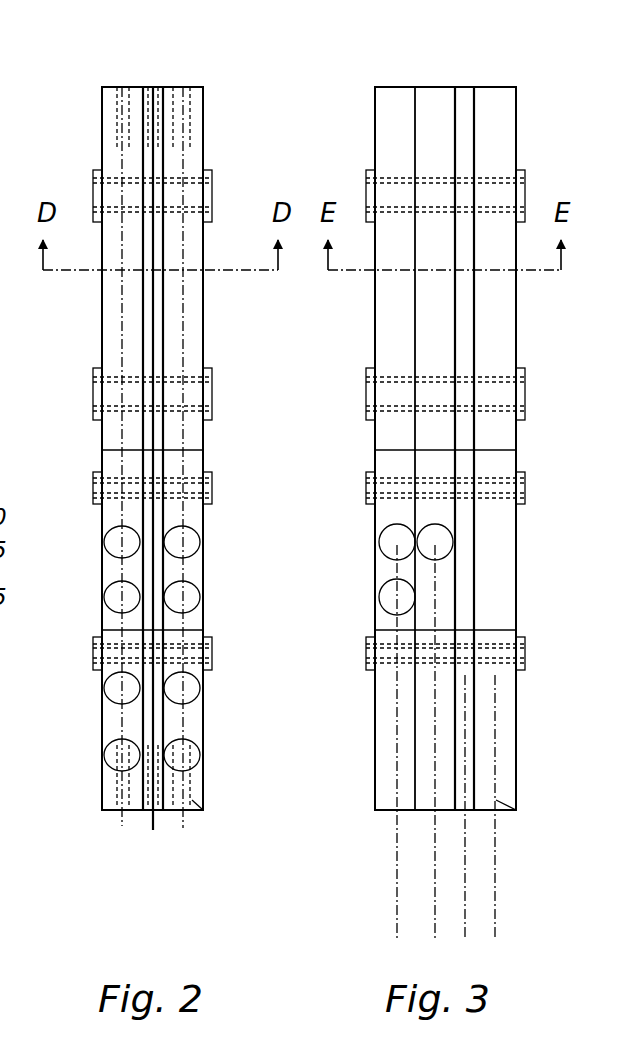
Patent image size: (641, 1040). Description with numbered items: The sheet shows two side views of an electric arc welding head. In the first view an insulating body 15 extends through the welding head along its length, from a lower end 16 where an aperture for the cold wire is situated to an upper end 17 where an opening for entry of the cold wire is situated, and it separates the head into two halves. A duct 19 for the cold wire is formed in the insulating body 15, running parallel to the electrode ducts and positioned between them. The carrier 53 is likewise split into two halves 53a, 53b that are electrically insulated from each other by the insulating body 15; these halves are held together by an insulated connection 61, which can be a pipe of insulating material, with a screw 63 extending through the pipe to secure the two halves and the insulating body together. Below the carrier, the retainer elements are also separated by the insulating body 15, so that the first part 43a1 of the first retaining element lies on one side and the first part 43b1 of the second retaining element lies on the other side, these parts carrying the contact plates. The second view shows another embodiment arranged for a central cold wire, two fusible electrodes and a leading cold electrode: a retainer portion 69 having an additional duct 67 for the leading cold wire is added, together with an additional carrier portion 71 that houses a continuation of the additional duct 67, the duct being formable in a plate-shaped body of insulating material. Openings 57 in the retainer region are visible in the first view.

In FIG. 2, the insulating body 15 is at (157, 87).
In FIG. 3, the insulating body 15 is at (465, 92).
In FIG. 2, the lower end 16 is at (126, 815).
In FIG. 2, the upper end 17 is at (128, 84).
In FIG. 3, the duct 19 is at (383, 790).
In FIG. 2, the first part of the first retaining element 43a1 is at (222, 840).
In FIG. 3, the first part of the first retaining element 43a1 is at (425, 815).
In FIG. 3, the first part of the second retaining element 43b1 is at (498, 812).
In FIG. 2, the carrier 53 is at (222, 128).
In FIG. 2, the first carrier half 53a is at (115, 124).
In FIG. 3, the first carrier half 53a is at (427, 127).
In FIG. 2, the second carrier half 53b is at (197, 162).
In FIG. 3, the second carrier half 53b is at (494, 112).
In FIG. 2, the holes 57 is at (100, 648).
In FIG. 2, the insulated connection 61 is at (212, 376).
In FIG. 3, the insulated connection 61 is at (445, 571).
In FIG. 2, the screw 63 is at (93, 196).
In FIG. 3, the screw 63 is at (445, 295).
In FIG. 3, the additional duct 67 is at (392, 815).
In FIG. 3, the retainer portion 69 is at (397, 716).
In FIG. 3, the additional carrier portion 71 is at (393, 103).